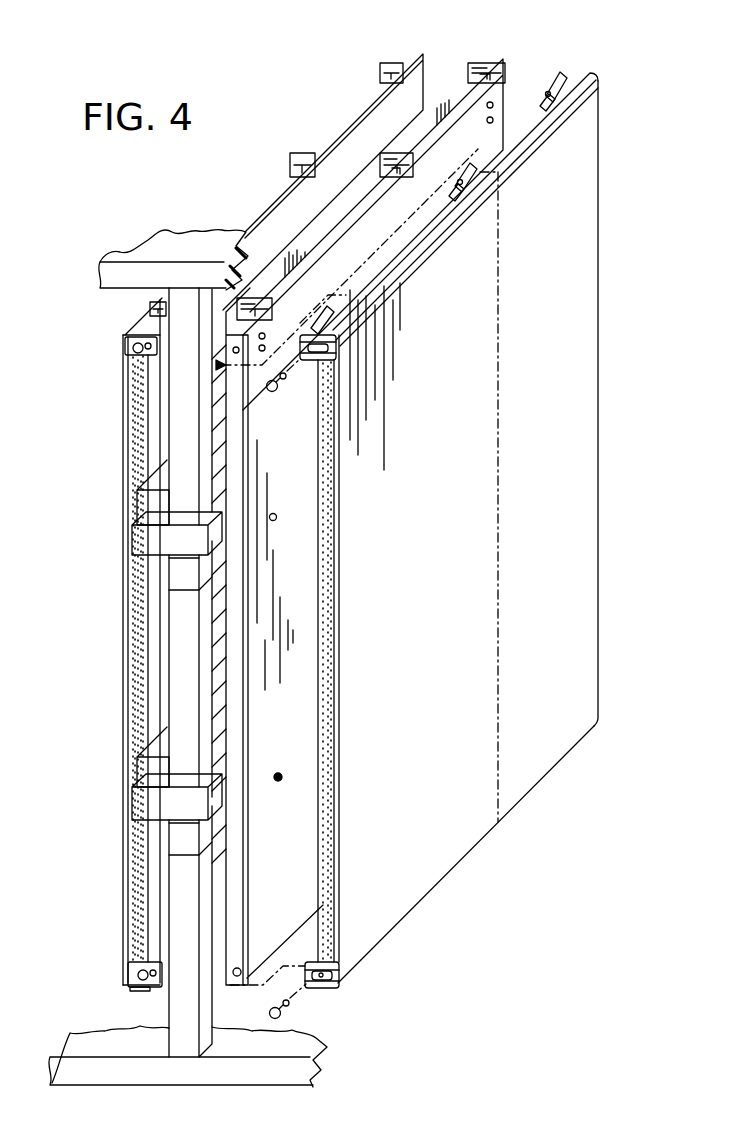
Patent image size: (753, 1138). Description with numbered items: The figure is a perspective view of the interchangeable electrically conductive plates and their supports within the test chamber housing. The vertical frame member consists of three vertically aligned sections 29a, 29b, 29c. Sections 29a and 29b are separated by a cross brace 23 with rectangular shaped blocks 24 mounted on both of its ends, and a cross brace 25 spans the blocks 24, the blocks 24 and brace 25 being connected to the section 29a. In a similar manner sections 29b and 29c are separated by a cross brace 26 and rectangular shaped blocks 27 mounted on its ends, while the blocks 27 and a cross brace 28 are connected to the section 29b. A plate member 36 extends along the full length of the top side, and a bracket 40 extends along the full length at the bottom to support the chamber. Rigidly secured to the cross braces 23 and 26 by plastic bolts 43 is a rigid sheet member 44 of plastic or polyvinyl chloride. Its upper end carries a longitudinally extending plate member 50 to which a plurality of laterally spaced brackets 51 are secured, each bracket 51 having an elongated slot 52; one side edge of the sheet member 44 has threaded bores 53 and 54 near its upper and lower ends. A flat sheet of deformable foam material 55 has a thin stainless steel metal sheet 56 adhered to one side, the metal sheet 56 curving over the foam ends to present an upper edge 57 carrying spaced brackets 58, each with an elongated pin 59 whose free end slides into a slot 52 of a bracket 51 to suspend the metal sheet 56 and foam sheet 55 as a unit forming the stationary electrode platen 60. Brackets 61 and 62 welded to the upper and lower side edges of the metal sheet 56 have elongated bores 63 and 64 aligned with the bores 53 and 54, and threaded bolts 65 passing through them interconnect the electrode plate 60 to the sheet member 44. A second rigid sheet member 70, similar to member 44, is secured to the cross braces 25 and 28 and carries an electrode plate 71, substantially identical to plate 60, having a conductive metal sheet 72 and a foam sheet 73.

The cross brace 23 is at (182, 572).
The rectangular shaped blocks 24 is at (152, 542).
The cross brace 25 is at (147, 502).
The cross brace 26 is at (182, 840).
The rectangular shaped blocks 27 is at (150, 803).
The cross brace 28 is at (150, 772).
The vertical frame member section 29a is at (183, 420).
The vertical frame member section 29b is at (183, 652).
The vertical frame member section 29c is at (187, 917).
The upper bracket member 36 is at (121, 272).
The bracket 40 is at (205, 1073).
The plastic bolts 43 is at (277, 518).
The rigid sheet member 44 is at (292, 700).
The plate member 50 is at (457, 80).
The brackets 51 is at (150, 306).
The elongated slot 52 is at (397, 177).
The threaded bore 53 is at (236, 354).
The threaded bore 54 is at (240, 968).
The foam sheet 55 is at (327, 637).
The metal sheet 56 is at (428, 858).
The upper edge 57 is at (400, 262).
The brackets 58 is at (547, 100).
The elongated pin 59 is at (333, 320).
The electrode platen 60 is at (613, 458).
The bracket 61 is at (333, 357).
The bracket 62 is at (333, 966).
The elongated bore 63 is at (335, 343).
The elongated bore 64 is at (320, 988).
The threaded bolts 65 is at (127, 340).
The rigid sheet member 70 is at (152, 712).
The electrode plate 71 is at (112, 623).
The metal sheet 72 is at (120, 680).
The foam sheet 73 is at (133, 737).